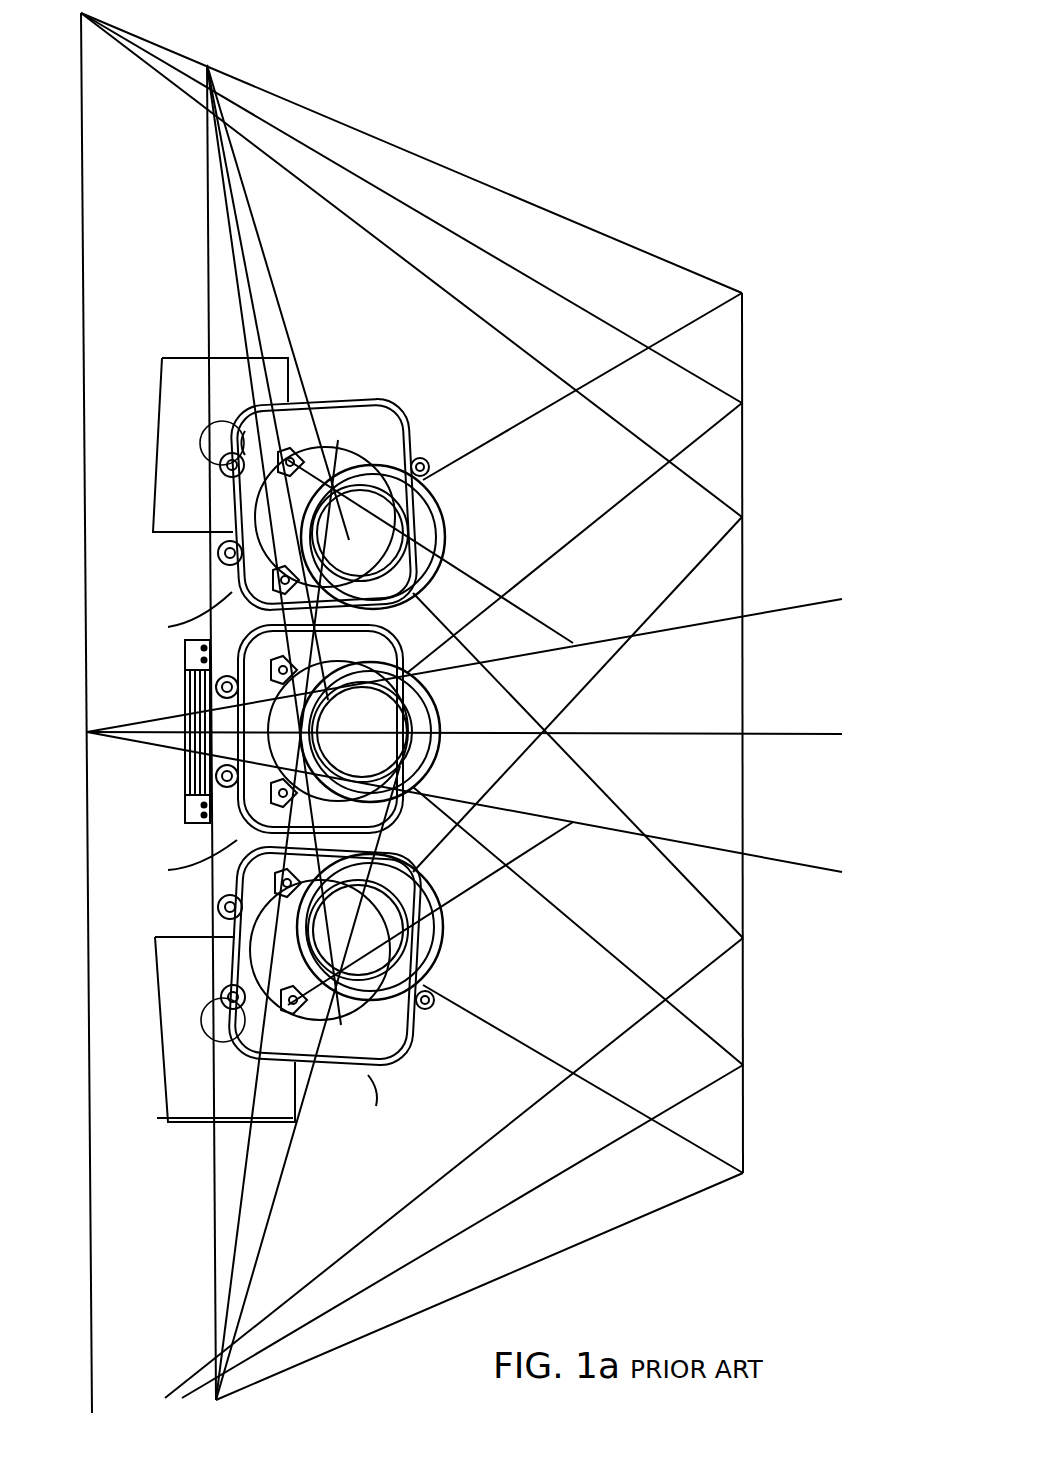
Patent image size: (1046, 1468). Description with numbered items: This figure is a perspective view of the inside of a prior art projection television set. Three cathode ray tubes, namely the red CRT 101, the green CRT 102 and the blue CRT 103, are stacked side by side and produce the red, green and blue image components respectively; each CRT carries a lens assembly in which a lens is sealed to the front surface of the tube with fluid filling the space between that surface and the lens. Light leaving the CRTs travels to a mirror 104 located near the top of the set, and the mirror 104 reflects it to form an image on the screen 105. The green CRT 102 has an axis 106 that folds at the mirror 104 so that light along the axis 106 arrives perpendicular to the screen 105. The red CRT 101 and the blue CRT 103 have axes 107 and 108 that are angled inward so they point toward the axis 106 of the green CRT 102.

The red CRT 101 is at (452, 932).
The green CRT 102 is at (440, 705).
The blue CRT 103 is at (444, 532).
The mirror 104 is at (745, 893).
The screen 105 is at (87, 450).
The axis of the green CRT 106 is at (641, 728).
The axis of the red CRT 107 is at (542, 840).
The axis of the blue CRT 108 is at (468, 583).